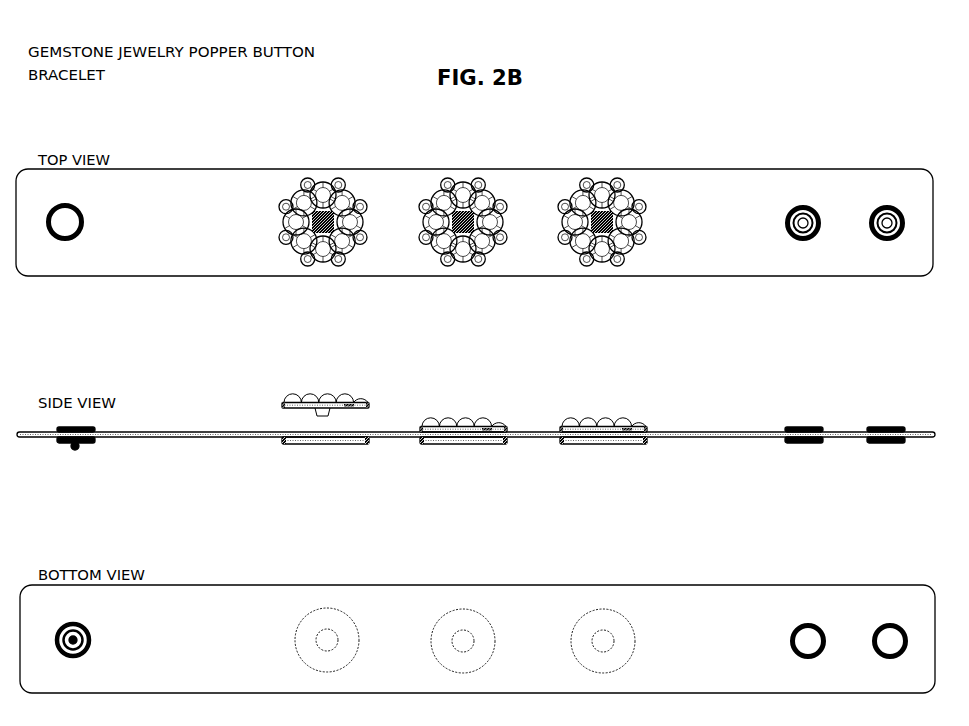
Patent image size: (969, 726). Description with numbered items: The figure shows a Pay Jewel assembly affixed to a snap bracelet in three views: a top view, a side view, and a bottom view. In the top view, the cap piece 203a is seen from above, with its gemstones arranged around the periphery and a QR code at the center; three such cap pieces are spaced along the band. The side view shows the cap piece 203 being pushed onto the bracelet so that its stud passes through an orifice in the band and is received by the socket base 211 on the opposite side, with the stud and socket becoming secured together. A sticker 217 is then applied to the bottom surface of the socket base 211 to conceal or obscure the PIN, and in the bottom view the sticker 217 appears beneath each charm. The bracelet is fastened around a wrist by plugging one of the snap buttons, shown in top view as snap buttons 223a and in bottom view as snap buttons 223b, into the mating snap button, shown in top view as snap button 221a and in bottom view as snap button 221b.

The snap button (top view) 221a is at (89, 222).
The cap piece (top view) 203a is at (482, 222).
The snap buttons (top view) 223a is at (824, 223).
The cap piece 203 is at (282, 404).
The socket base 211 is at (282, 440).
The sticker 217 is at (360, 446).
The snap button (bottom view) 221b is at (95, 640).
The snap buttons (bottom view) 223b is at (829, 641).